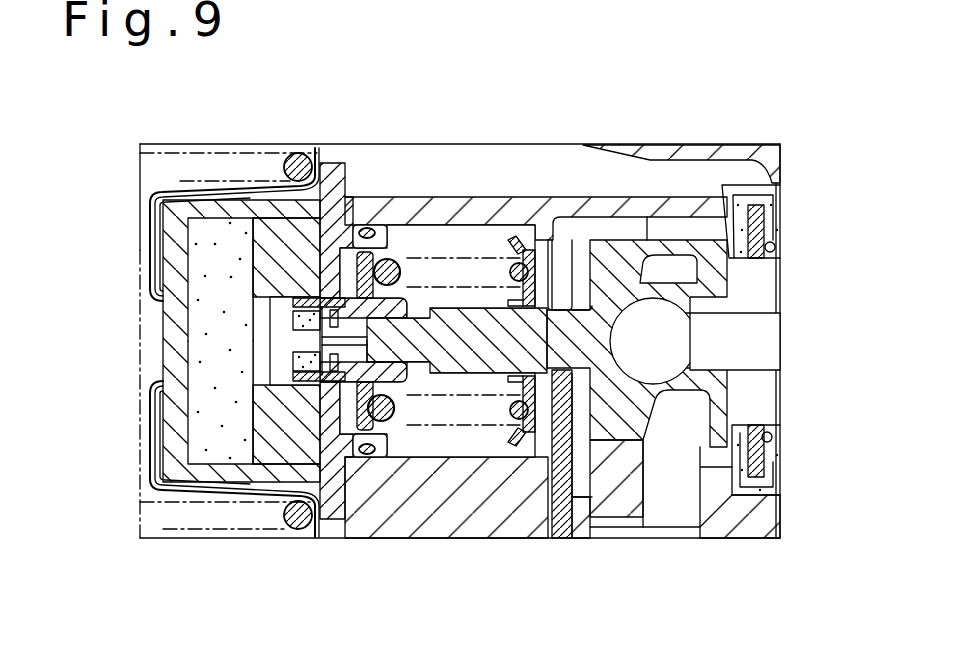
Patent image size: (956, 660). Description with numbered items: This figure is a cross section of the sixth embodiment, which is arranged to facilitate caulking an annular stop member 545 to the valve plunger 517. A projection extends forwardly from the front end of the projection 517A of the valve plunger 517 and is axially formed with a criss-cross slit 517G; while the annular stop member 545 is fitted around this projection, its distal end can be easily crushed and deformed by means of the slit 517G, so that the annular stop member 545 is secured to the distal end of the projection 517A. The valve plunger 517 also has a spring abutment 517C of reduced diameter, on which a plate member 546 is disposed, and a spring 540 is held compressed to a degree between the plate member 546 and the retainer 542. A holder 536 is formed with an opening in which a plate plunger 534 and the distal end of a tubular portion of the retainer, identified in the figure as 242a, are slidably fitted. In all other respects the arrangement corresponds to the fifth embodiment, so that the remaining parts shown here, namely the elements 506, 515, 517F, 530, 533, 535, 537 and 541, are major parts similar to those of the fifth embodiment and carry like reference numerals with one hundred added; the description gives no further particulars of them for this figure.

The housing 506 is at (515, 530).
The seal device 515 is at (848, 275).
The valve plunger 517 is at (667, 397).
The projection 517A is at (388, 368).
The spring abutment 517C is at (538, 455).
The flange portion 517F is at (352, 440).
The criss-cross slit 517G is at (282, 343).
The drive shaft 530 is at (772, 352).
The pressure chamber 533 is at (419, 254).
The plate plunger 534 is at (275, 310).
The friction plate 535 is at (193, 426).
The holder 536 is at (277, 392).
The pressure plate 537 is at (157, 363).
The spring 540 is at (465, 257).
The cover plate 541 is at (292, 214).
The retainer 542 is at (403, 197).
The annular stop member 545 is at (333, 318).
The plate member 546 is at (515, 240).
The plate 242a is at (317, 374).